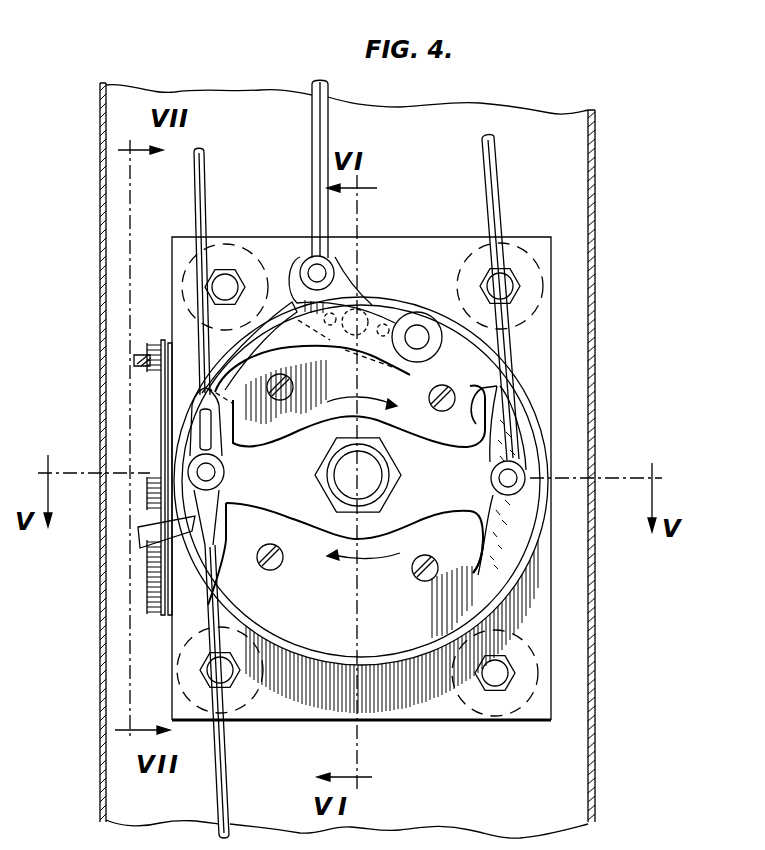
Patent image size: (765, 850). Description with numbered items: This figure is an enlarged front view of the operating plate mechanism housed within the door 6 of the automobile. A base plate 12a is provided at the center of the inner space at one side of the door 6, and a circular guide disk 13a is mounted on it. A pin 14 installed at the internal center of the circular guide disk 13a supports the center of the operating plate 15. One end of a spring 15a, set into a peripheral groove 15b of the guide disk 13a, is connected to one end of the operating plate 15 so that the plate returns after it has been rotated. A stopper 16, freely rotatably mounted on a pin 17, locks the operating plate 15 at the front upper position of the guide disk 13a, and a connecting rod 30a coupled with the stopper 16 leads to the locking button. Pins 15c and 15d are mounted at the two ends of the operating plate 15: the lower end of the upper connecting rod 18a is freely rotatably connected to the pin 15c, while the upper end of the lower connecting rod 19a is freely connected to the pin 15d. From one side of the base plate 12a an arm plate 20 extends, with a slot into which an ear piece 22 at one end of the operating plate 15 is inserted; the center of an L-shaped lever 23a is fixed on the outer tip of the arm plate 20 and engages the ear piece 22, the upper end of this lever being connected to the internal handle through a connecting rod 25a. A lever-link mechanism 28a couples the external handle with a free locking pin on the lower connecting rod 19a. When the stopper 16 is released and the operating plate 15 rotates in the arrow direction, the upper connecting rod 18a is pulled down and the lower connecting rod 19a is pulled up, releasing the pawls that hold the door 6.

The door 6 is at (593, 208).
The base plate 12a is at (551, 657).
The circular guide disk 13a is at (494, 590).
The pin 14 is at (375, 466).
The operating plate 15 is at (310, 508).
The spring 15a is at (496, 512).
The peripheral groove 15b is at (474, 572).
The pin 15c is at (523, 474).
The pin 15d is at (216, 472).
The stopper 16 is at (348, 265).
The pin 17 is at (420, 330).
The upper connecting rod 18a is at (497, 160).
The lower connecting rod 19a is at (226, 787).
The arm plate 20 is at (163, 616).
The ear piece 22 is at (140, 545).
The L-shaped lever 23a is at (160, 408).
The connecting rod 25a is at (134, 360).
The lever-link mechanism 28a is at (203, 184).
The connecting rod 30a is at (312, 92).